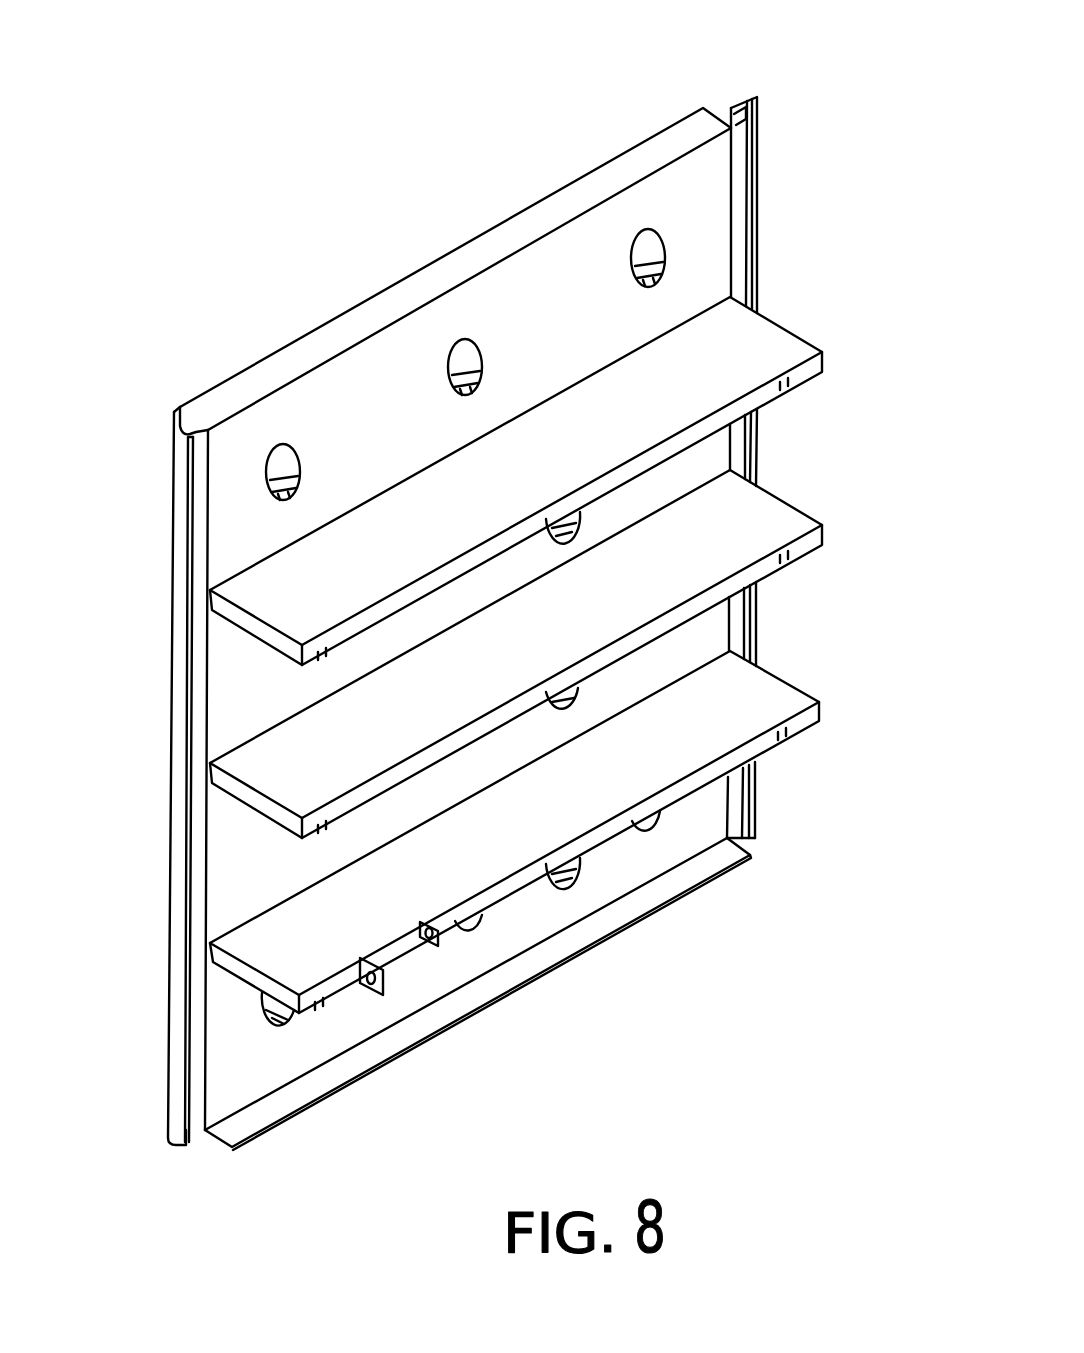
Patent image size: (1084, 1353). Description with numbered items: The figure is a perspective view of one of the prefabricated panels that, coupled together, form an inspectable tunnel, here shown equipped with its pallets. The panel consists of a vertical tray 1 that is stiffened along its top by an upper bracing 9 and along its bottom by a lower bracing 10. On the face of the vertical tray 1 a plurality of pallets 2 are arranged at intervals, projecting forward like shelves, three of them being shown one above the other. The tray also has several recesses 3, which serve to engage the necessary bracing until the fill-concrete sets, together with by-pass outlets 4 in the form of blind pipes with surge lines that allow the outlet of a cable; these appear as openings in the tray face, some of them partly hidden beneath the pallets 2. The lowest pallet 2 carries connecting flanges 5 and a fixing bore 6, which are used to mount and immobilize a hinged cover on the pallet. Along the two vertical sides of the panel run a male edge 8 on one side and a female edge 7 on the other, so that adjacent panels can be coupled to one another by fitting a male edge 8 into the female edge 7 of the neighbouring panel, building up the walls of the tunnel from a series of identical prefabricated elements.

The vertical tray 1 is at (394, 625).
The pallet 2 is at (766, 343).
The recesses 3 is at (286, 445).
The by-pass outlets 4 is at (574, 520).
The flanges 5 is at (387, 987).
The bore to fix hinged cover 6 is at (423, 944).
The female edge 7 is at (742, 103).
The male edge 8 is at (182, 432).
The upper bracing 9 is at (383, 313).
The lower bracing 10 is at (237, 1132).